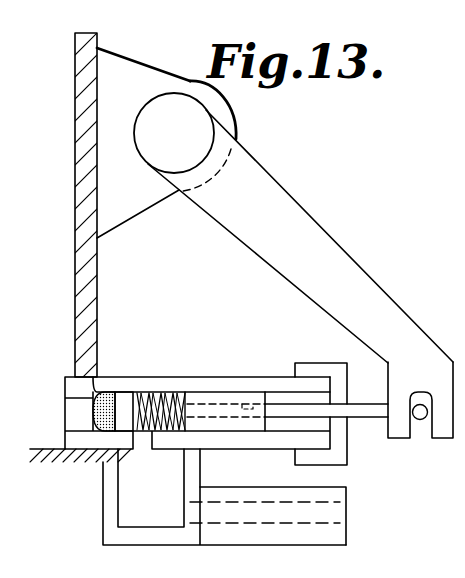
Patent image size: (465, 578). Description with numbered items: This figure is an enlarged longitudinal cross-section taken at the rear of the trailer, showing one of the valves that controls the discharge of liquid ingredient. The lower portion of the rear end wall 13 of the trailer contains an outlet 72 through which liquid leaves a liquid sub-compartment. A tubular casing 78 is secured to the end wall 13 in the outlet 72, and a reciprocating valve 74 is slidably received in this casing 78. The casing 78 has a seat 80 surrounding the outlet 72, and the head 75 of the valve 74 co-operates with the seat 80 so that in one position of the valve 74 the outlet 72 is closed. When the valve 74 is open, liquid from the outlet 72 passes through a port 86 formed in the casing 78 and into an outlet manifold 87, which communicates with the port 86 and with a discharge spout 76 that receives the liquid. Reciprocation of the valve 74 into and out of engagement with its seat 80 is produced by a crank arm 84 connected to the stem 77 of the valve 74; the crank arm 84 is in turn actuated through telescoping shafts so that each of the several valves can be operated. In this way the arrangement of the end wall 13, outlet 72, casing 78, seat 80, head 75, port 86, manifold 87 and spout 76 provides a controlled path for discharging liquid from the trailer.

The rear end wall 13 is at (98, 308).
The outlet 72 is at (75, 418).
The reciprocating valve 74 is at (193, 402).
The head 75 is at (102, 431).
The discharge spout 76 is at (338, 508).
The stem 77 is at (369, 418).
The tubular casing 78 is at (238, 383).
The seat 80 is at (97, 388).
The crank arm 84 is at (347, 267).
The port 86 is at (146, 438).
The outlet manifold 87 is at (148, 520).